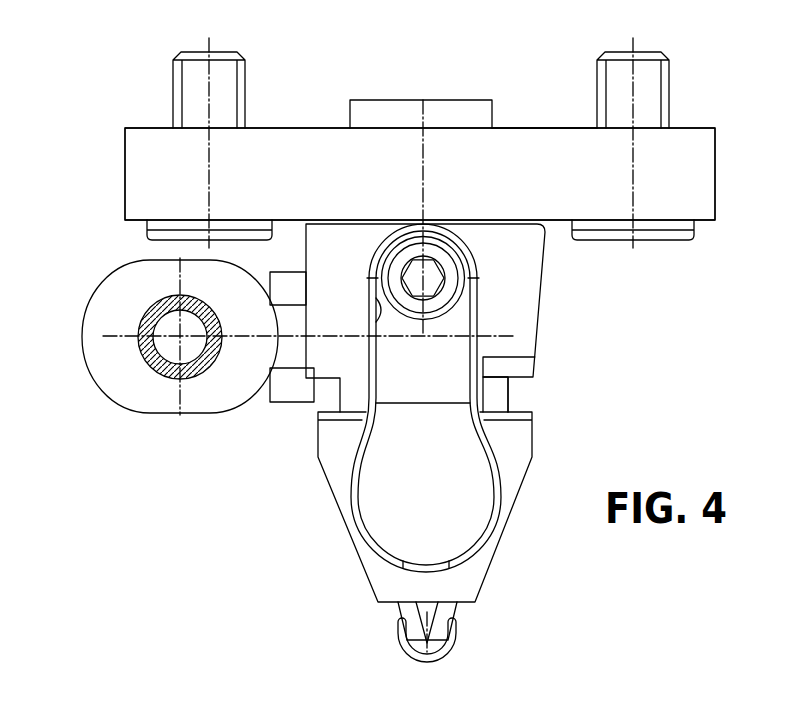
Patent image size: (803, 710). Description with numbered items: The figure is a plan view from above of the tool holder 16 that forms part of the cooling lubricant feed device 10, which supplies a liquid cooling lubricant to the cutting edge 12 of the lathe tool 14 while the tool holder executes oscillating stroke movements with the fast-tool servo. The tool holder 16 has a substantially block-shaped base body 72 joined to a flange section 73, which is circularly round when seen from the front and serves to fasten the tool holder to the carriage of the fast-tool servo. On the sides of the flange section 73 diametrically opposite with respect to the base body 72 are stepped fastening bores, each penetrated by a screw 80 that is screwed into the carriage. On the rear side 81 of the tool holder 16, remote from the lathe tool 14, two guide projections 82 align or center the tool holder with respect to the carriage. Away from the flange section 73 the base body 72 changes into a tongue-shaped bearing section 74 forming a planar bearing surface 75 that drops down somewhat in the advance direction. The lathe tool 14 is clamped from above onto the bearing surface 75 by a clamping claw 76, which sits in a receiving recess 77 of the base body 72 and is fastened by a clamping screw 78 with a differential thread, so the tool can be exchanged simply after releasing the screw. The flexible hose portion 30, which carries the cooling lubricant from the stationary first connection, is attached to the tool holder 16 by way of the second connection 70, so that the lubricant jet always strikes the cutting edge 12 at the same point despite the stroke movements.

The device for supplying a liquid cooling lubricant 10 is at (163, 428).
The cutting edge 12 is at (458, 644).
The lathe tool 14 is at (510, 450).
The tool holder 16 is at (696, 176).
The flexible hose portion 30 is at (152, 312).
The second connection 70 is at (128, 373).
The base body 72 is at (530, 278).
The flange section 73 is at (584, 176).
The bearing section 74 is at (338, 393).
The bearing surface 75 is at (502, 386).
The clamping claw 76 is at (438, 502).
The receiving recess 77 is at (378, 302).
The clamping screw 78 is at (442, 262).
The screw 80 is at (244, 230).
The rear side 81 is at (567, 128).
The guide projections 82 is at (433, 116).